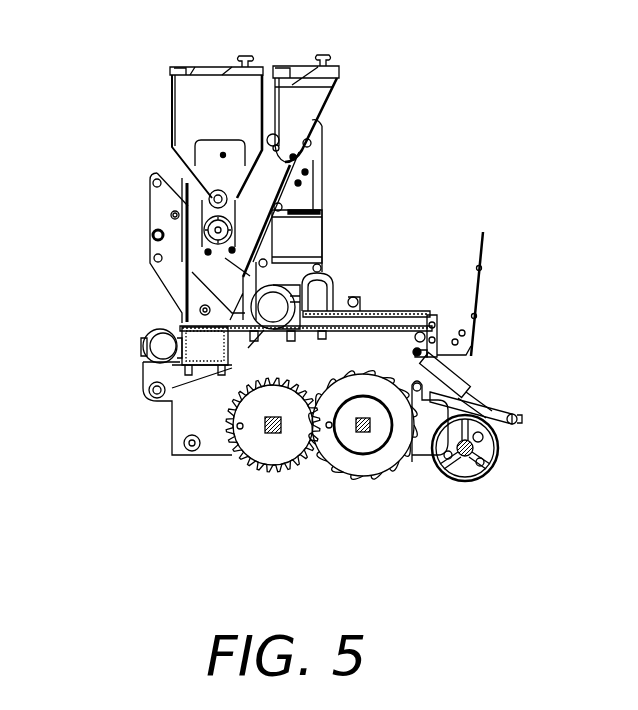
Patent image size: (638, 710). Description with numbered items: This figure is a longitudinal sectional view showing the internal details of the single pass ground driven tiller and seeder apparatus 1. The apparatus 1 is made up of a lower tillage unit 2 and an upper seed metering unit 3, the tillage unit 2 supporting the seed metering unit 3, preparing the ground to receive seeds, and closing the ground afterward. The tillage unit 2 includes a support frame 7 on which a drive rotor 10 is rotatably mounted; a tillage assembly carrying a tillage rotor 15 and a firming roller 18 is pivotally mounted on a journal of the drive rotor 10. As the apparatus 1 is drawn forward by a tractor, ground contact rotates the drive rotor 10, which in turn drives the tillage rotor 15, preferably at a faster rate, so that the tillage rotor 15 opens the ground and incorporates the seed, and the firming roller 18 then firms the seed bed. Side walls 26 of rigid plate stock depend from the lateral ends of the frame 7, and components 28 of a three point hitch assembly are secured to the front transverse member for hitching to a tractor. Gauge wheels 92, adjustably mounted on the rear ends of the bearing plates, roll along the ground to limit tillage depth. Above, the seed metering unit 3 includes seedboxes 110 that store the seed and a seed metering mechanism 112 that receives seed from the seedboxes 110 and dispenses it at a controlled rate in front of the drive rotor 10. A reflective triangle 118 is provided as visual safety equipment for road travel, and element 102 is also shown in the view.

The single pass ground driven tiller and seeder apparatus 1 is at (430, 139).
The lower tillage unit 2 is at (106, 431).
The upper seed metering unit 3 is at (159, 95).
The support frame 7 is at (177, 363).
The drive rotor 10 is at (248, 476).
The tillage rotor 15 is at (355, 481).
The firming roller 18 is at (466, 409).
The side walls 26 is at (175, 438).
The components of a three point hitch assembly 28 is at (157, 202).
The gauge wheels 92 is at (495, 466).
The strut 102 is at (459, 377).
The seedboxes 110 is at (306, 97).
The seed metering mechanism 112 is at (205, 238).
The reflective triangle 118 is at (477, 280).